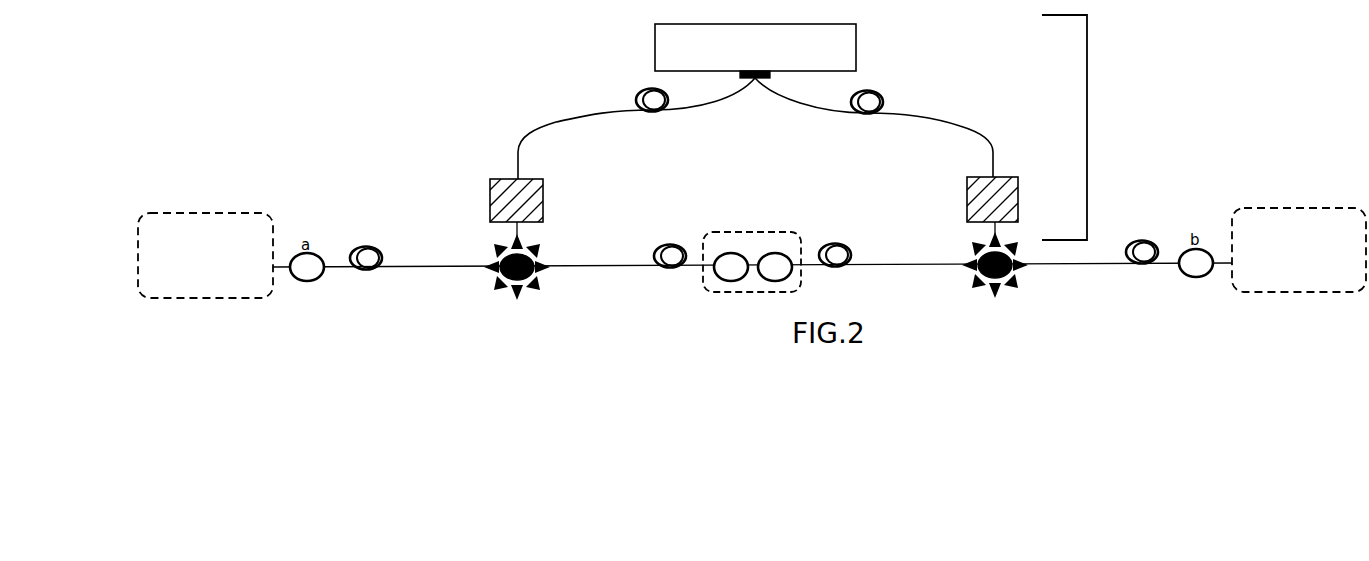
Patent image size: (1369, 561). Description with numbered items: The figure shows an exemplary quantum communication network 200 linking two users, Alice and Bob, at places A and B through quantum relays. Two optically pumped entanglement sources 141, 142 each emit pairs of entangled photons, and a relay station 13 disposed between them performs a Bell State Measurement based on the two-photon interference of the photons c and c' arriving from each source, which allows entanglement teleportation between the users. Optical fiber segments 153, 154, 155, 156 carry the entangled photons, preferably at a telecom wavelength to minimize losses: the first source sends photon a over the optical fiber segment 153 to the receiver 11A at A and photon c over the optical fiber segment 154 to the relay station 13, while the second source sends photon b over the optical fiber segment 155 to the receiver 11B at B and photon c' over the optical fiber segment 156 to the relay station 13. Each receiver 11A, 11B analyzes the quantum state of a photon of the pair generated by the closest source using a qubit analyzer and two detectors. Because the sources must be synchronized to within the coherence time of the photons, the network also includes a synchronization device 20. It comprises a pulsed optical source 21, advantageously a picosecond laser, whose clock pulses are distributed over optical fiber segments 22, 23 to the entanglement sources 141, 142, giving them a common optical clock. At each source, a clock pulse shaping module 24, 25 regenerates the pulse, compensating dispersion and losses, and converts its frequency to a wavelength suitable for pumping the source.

The quantum communication network 200 is at (358, 107).
The receiver 11A is at (240, 213).
The receiver 11B is at (1290, 208).
The relay station 13 is at (758, 292).
The synchronization device 20 is at (1090, 112).
The pulsed optical source 21 is at (856, 45).
The optical fiber segment 22 is at (556, 120).
The optical fiber segment 23 is at (955, 112).
The clock pulse shaping module 24 is at (490, 180).
The clock pulse shaping module 25 is at (1013, 176).
The entanglement source 141 is at (507, 292).
The entanglement source 142 is at (990, 287).
The optical fiber segment 153 is at (427, 268).
The optical fiber segment 154 is at (622, 268).
The optical fiber segment 155 is at (1107, 265).
The optical fiber segment 156 is at (912, 265).